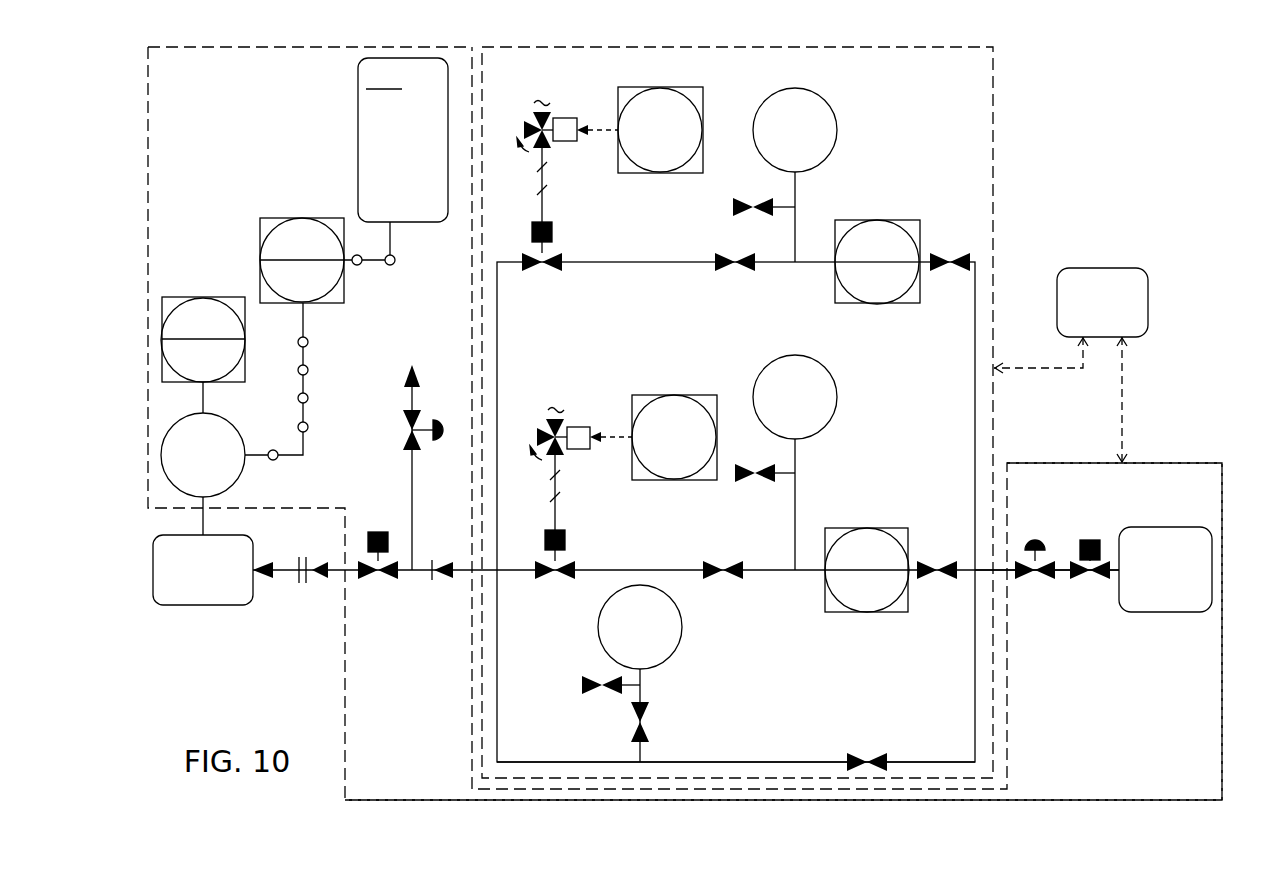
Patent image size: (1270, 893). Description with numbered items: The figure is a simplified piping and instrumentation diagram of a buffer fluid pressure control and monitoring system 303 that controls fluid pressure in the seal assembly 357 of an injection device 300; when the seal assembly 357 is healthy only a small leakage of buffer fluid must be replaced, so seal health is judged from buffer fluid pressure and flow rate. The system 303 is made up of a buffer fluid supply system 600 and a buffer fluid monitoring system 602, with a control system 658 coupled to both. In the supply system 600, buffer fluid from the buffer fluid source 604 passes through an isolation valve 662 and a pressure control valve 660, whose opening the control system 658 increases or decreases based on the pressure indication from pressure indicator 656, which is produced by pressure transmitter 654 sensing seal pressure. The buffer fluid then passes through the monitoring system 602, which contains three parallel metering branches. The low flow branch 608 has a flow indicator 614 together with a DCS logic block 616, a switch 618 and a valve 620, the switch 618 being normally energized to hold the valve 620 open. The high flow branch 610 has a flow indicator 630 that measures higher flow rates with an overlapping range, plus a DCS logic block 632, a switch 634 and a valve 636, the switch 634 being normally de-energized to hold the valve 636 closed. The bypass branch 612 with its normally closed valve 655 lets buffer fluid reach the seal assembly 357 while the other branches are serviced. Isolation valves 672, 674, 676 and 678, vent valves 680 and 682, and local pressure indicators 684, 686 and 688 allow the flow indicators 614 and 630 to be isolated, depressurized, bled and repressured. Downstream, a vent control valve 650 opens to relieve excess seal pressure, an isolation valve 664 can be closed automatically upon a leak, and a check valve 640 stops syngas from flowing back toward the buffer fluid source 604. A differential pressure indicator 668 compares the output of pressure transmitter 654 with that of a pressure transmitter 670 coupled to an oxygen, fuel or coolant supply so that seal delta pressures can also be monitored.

The buffer fluid pressure control and monitoring system 303 is at (1093, 88).
The buffer fluid monitoring system 602 is at (994, 171).
The buffer fluid supply system 600 is at (1058, 462).
The high flow branch 610 is at (975, 318).
The control system 658 is at (1113, 268).
The buffer fluid source 604 is at (1150, 527).
The pressure control valve 660 is at (1040, 540).
The isolation valve 662 is at (1090, 540).
The low flow branch 608 is at (968, 573).
The isolation valve 672 is at (929, 556).
The flow indicator 614 is at (891, 613).
The isolation valve 674 is at (731, 585).
The vent valve 680 is at (740, 488).
The local pressure indicator 684 is at (800, 354).
The flow indicator 630 is at (864, 304).
The isolation valve 676 is at (941, 252).
The isolation valve 678 is at (744, 274).
The vent valve 682 is at (744, 197).
The local pressure indicator 686 is at (838, 120).
The DCS logic block 632 is at (683, 174).
The DCS logic block 616 is at (697, 395).
The switch 634 is at (524, 128).
The switch 618 is at (537, 434).
The valve 636 is at (532, 232).
The valve 620 is at (545, 540).
The local pressure indicator 688 is at (681, 651).
The valve 655 is at (859, 750).
The bypass branch 612 is at (932, 760).
The check valve 640 is at (441, 582).
The isolation valve 664 is at (378, 531).
The control valve 650 is at (436, 422).
The pressure transmitter 654 is at (242, 478).
The pressure indicator 656 is at (224, 297).
The differential pressure indicator 668 is at (283, 218).
The pressure transmitter 670 is at (428, 222).
The injection device 300 is at (286, 567).
The seal assembly 357 is at (213, 606).